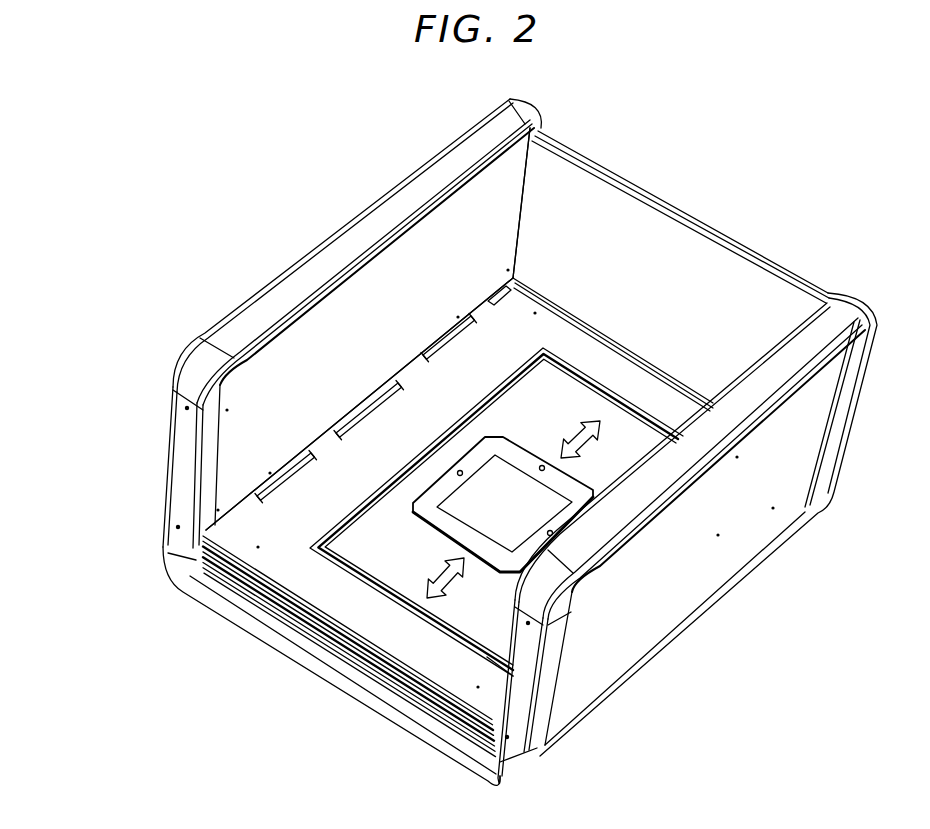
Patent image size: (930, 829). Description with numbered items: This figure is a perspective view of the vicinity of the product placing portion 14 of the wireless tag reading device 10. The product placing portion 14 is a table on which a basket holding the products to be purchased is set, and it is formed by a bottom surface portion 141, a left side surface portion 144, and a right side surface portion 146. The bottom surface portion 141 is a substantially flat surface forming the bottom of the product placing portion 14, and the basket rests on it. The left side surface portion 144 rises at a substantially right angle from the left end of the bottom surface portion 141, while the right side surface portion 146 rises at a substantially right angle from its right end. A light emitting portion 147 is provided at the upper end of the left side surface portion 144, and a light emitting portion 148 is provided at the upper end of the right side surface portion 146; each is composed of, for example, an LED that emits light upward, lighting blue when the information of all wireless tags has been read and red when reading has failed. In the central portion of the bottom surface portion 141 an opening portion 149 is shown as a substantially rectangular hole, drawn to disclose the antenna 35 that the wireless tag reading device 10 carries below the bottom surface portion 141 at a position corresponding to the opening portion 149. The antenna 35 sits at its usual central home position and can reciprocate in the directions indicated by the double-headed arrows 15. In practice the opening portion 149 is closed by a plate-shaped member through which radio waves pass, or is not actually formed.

The wireless tag reading device 10 is at (326, 158).
The product placing portion 14 is at (393, 433).
The movement direction of holding plate 15 is at (583, 427).
The antenna 35 is at (497, 490).
The bottom surface portion 141 is at (308, 575).
The left side surface portion 144 is at (244, 441).
The right side surface portion 146 is at (723, 568).
The light emitting portion 147 is at (466, 142).
The light emitting portion 148 is at (775, 372).
The opening portion 149 is at (407, 590).